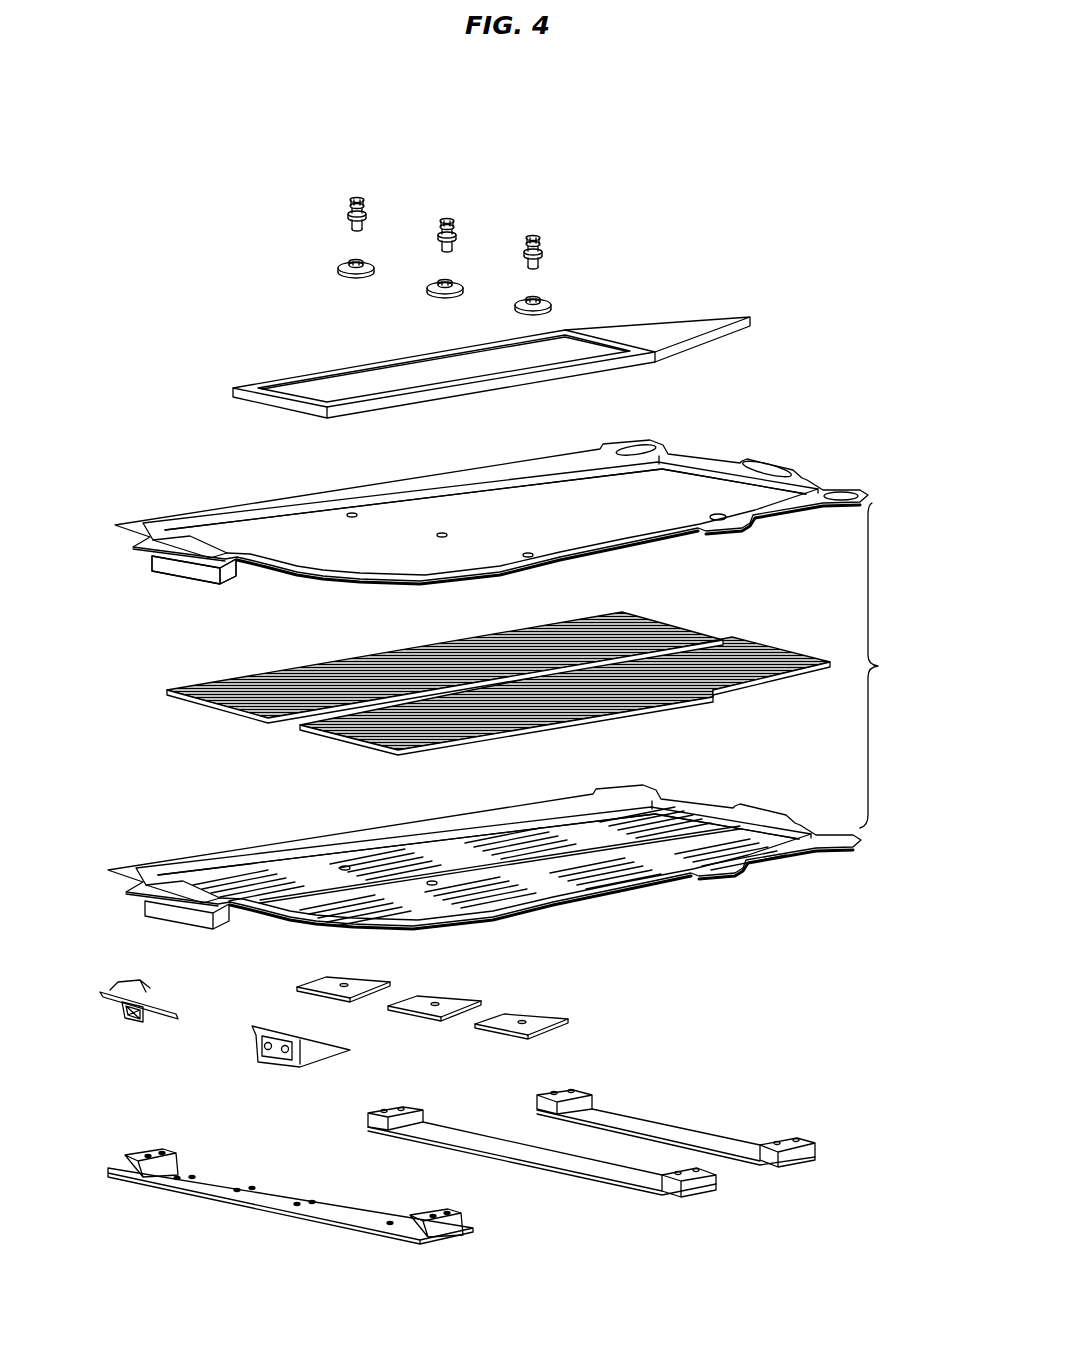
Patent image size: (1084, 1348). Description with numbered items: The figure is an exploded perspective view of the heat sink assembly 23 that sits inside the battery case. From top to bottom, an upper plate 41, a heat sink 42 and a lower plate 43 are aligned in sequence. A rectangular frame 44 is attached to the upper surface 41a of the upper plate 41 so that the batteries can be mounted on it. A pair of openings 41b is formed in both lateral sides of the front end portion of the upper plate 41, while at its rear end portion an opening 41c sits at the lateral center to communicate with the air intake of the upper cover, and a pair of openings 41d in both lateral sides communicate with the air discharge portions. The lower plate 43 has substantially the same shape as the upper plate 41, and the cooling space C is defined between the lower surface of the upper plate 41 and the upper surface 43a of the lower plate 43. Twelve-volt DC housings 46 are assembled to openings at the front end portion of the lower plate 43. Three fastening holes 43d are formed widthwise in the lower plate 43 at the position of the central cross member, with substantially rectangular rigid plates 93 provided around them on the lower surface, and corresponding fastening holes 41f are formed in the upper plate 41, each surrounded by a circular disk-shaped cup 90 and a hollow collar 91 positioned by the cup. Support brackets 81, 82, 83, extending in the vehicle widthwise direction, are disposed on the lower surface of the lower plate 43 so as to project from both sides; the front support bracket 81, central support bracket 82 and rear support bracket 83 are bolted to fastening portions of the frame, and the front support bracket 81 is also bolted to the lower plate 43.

The heat sink assembly 23 is at (735, 247).
The hollow collar 91 is at (533, 234).
The circular disk-shaped cup 90 is at (531, 312).
The rectangular frame 44 is at (300, 372).
The upper plate 41 is at (502, 483).
The upper surface of the upper plate 41a is at (572, 498).
The opening 41b is at (178, 543).
The opening 41c is at (764, 468).
The opening 41d is at (636, 448).
The fastening hole 41f is at (528, 553).
The heat sink 42 is at (660, 619).
The cooling space C is at (903, 680).
The lower plate 43 is at (484, 843).
The upper surface of the lower plate 43a is at (470, 888).
The fastening hole 43d is at (432, 881).
The rigid plate 93 is at (546, 1020).
The 12V DC housing 46 is at (152, 1013).
The front support bracket 81 is at (345, 1213).
The central support bracket 82 is at (608, 1172).
The rear support bracket 83 is at (748, 1150).